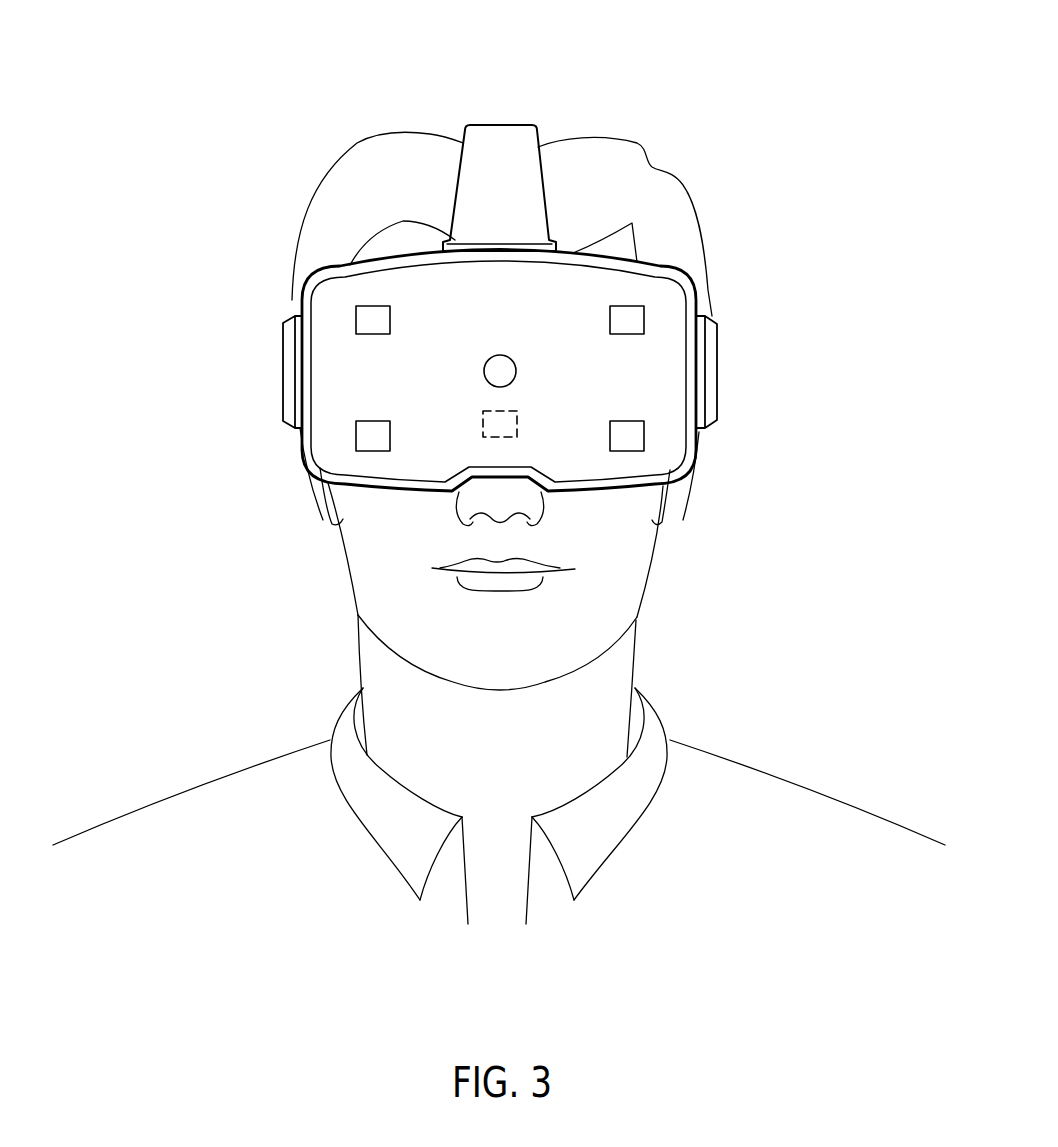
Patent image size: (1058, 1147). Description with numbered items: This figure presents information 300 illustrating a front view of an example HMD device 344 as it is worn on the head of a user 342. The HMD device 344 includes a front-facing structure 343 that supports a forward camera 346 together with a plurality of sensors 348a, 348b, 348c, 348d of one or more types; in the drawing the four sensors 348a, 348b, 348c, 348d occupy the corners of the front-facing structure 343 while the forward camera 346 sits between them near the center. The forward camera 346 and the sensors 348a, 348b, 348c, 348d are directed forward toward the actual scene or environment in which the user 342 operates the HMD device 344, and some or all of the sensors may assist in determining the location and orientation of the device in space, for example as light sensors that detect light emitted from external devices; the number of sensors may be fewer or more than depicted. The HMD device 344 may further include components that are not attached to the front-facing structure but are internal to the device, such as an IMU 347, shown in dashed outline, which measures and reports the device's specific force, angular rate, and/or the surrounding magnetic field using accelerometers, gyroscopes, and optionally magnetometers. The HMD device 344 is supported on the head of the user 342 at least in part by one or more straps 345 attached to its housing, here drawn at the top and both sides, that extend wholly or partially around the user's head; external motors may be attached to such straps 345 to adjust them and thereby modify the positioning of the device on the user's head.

The information 300 is at (773, 58).
The user 342 is at (762, 768).
The front-facing structure 343 is at (337, 433).
The HMD device 344 is at (623, 497).
The straps 345 is at (498, 126).
The forward camera 346 is at (497, 355).
The IMU electronic device 347 is at (517, 418).
The sensor 348a is at (418, 306).
The sensor 348b is at (372, 420).
The sensor 348c is at (608, 321).
The sensor 348d is at (622, 420).